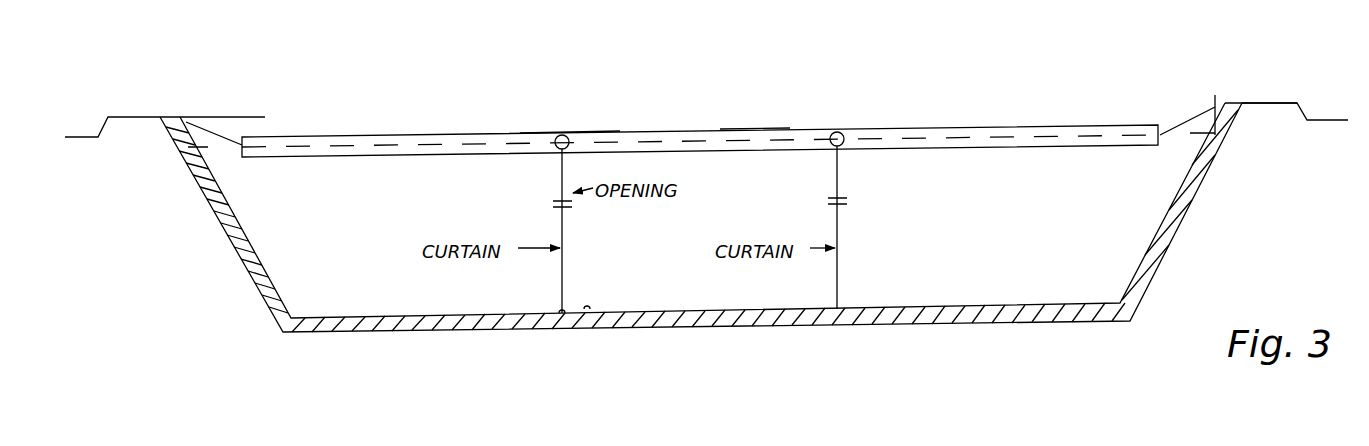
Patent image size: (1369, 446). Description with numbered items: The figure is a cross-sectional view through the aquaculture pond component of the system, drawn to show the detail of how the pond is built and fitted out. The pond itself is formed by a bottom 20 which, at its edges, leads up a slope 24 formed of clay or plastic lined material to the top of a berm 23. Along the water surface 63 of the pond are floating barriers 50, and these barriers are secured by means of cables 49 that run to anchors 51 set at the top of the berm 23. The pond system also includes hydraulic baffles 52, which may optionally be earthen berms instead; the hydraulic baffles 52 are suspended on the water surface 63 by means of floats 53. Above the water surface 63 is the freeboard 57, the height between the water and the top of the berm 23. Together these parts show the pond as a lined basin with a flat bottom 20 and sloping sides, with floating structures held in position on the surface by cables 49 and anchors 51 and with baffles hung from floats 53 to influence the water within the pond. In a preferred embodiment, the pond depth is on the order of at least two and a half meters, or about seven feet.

The bottom 20 is at (912, 305).
The berm 23 is at (1288, 100).
The slope 24 is at (1175, 220).
The cables 49 is at (1180, 118).
The floating barriers 50 is at (355, 136).
The anchors 51 is at (1213, 96).
The hydraulic baffles 52 is at (565, 130).
The floats 53 is at (573, 130).
The freeboard 57 is at (212, 112).
The water surface 63 is at (752, 128).